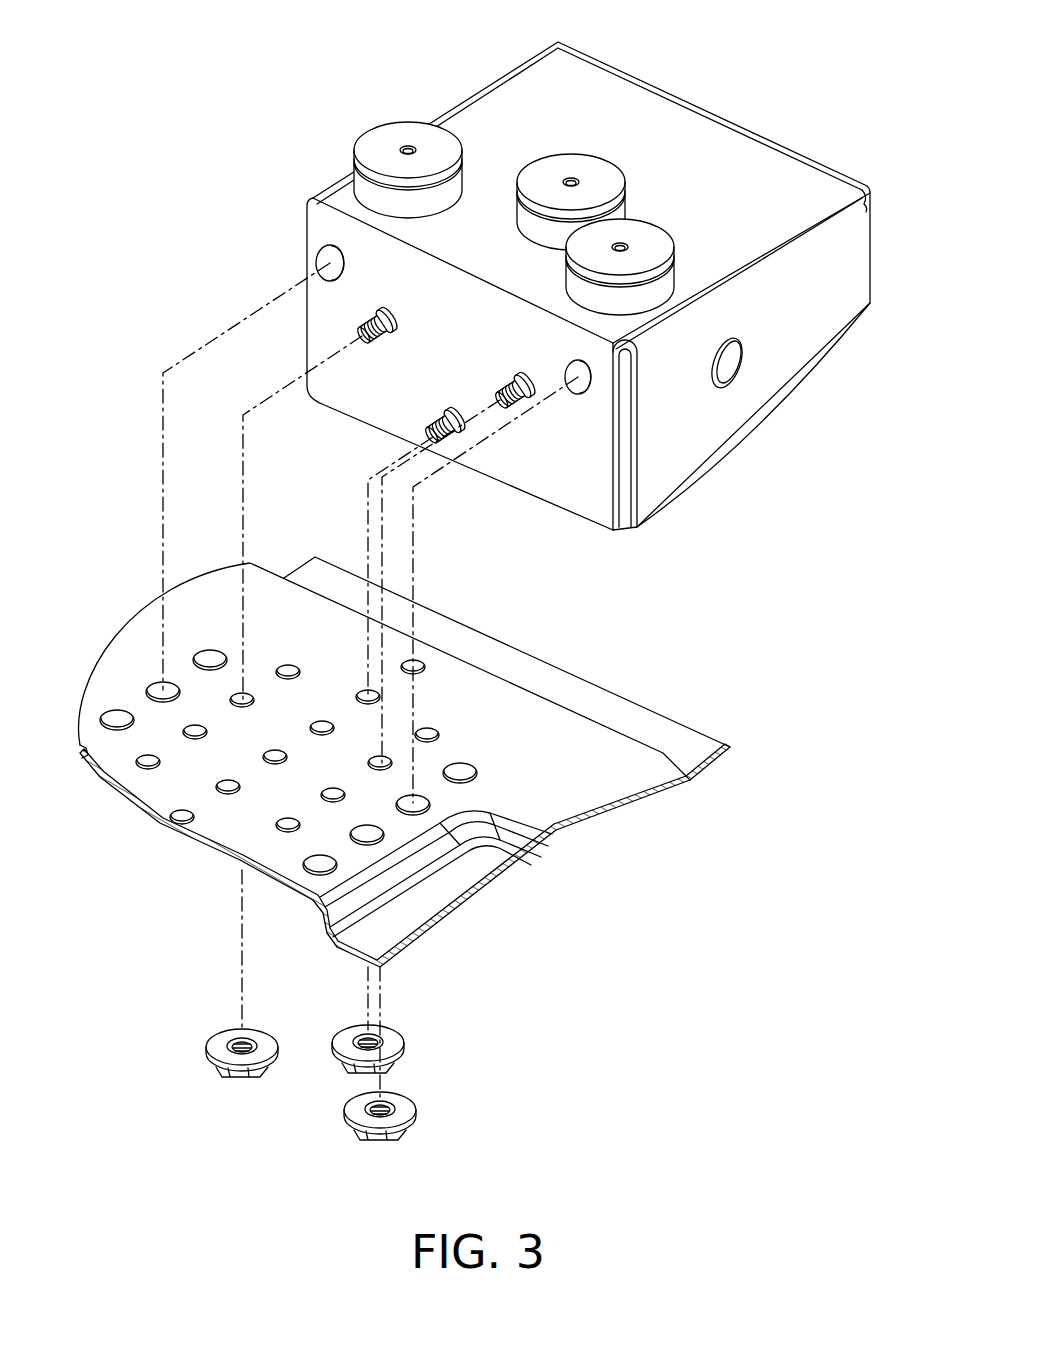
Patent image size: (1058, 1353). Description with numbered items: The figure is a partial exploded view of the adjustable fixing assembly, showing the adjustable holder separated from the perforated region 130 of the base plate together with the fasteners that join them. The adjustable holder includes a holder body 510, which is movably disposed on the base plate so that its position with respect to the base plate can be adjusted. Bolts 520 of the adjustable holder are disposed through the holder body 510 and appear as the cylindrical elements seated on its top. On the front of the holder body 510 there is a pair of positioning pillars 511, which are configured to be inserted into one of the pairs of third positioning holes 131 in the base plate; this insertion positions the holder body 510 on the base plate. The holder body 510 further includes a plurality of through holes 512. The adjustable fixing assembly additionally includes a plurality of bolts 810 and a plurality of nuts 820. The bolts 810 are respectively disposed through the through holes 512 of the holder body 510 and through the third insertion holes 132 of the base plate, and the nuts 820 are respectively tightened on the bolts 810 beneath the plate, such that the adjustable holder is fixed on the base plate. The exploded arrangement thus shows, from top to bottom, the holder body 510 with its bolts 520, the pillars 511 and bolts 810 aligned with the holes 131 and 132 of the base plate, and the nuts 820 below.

The mounting plate 130 is at (404, 762).
The third positioning holes 131 is at (210, 652).
The third insertion holes 132 is at (289, 664).
The holder body 510 is at (705, 432).
The positioning pillars 511 is at (326, 263).
The through holes 512 is at (362, 305).
The bolts 520 is at (408, 148).
The bolts 810 is at (377, 343).
The nuts 820 is at (394, 1040).